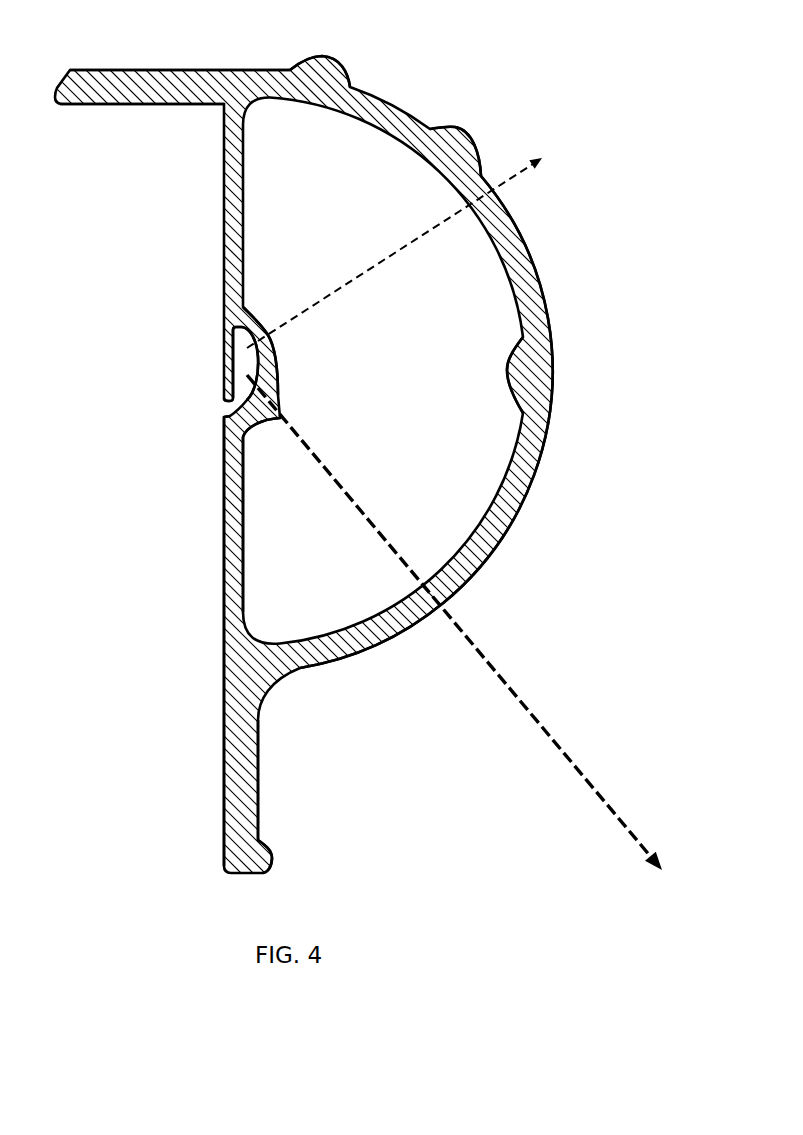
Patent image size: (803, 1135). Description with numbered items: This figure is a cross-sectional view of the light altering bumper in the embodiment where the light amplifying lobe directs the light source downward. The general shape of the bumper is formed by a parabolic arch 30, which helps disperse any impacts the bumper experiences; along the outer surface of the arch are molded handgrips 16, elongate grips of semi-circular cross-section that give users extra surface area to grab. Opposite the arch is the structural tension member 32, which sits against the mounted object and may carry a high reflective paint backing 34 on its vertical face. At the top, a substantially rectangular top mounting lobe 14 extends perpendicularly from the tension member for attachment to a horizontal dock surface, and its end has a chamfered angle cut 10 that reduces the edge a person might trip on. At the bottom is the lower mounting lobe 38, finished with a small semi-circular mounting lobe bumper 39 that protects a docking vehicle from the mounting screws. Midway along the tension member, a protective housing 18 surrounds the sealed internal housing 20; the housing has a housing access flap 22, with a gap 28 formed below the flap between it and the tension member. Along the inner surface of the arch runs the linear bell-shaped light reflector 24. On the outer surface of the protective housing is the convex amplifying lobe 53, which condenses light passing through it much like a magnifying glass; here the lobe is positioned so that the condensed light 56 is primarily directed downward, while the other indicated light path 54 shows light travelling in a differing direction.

The chamfered angle cut 10 is at (62, 82).
The top mounting lobe 14 is at (172, 83).
The molded handgrip 16 is at (332, 55).
The protective housing 18 is at (256, 331).
The sealed internal housing 20 is at (245, 357).
The housing access flap 22 is at (232, 377).
The linear bell-shaped light reflector 24 is at (509, 362).
The gap 28 is at (231, 407).
The parabolic arch 30 is at (488, 563).
The structural tension member 32 is at (245, 508).
The high reflective paint backing 34 is at (222, 553).
The lower mounting lobe 38 is at (258, 817).
The mounting lobe bumper 39 is at (272, 857).
The amplifying lobe 53 is at (276, 421).
The upward illumination direction 54 is at (388, 255).
The condensed light 56 is at (379, 530).